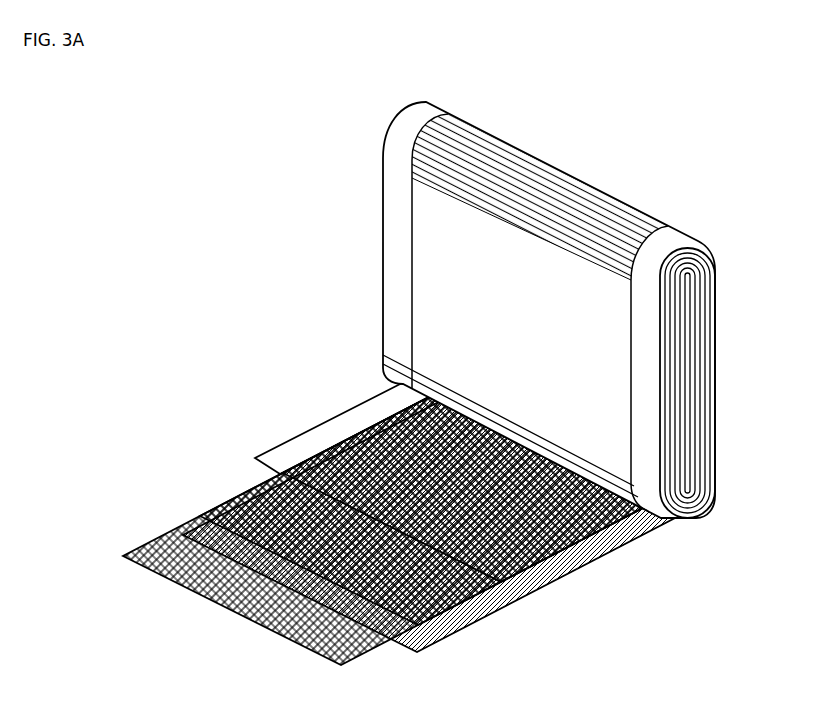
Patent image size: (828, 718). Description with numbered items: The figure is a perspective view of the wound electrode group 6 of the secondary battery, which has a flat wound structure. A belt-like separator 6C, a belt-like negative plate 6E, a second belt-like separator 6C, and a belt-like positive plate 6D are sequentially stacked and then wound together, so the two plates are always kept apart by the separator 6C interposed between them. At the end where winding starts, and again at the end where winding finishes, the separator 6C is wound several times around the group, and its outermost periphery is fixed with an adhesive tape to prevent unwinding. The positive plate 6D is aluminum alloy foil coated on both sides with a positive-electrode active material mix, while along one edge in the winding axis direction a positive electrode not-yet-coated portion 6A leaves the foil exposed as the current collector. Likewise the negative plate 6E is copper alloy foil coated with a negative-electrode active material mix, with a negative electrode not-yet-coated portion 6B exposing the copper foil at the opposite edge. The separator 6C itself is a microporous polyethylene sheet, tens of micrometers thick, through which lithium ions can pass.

The wound electrode group 6 is at (537, 310).
The positive electrode not-yet-coated portion 6A is at (386, 240).
The negative electrode not-yet-coated portion 6B is at (637, 372).
The separator 6C is at (366, 531).
The positive plate 6D is at (117, 547).
The negative plate 6E is at (328, 420).